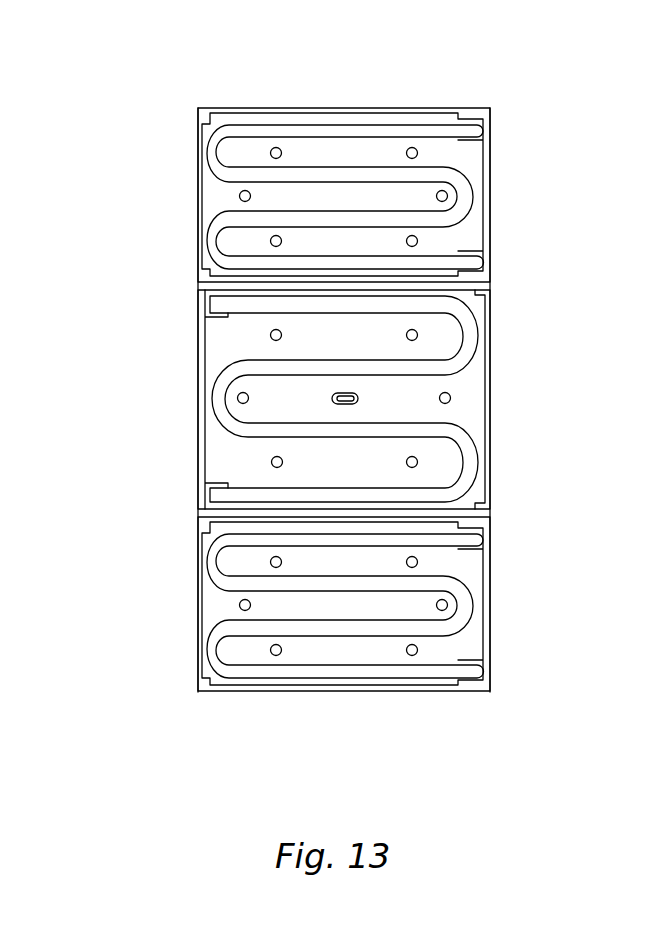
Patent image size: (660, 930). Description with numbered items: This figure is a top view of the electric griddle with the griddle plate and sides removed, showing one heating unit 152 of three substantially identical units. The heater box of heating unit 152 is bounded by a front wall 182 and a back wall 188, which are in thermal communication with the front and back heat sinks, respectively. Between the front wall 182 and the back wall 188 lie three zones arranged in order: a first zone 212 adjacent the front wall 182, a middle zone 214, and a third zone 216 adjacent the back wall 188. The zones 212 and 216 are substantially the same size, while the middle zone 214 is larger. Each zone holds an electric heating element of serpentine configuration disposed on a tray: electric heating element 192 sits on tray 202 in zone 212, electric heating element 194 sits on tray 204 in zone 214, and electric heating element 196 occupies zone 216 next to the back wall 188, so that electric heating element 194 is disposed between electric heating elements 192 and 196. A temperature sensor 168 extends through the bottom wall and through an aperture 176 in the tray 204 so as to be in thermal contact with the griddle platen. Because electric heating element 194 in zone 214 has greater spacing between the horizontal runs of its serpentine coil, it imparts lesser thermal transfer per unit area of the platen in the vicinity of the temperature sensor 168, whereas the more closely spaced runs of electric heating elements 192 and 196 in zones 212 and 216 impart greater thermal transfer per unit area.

The heating unit 152 is at (143, 75).
The back wall 188 is at (372, 108).
The electric heating element 196 is at (200, 163).
The tray 204 is at (228, 201).
The zone 216 is at (524, 257).
The electric heating element 194 is at (205, 386).
The temperature sensor 168 is at (352, 407).
The aperture 176 is at (352, 407).
The zone 214 is at (516, 460).
The tray 202 is at (220, 600).
The electric heating element 192 is at (201, 627).
The zone 212 is at (513, 611).
The front wall 182 is at (320, 696).